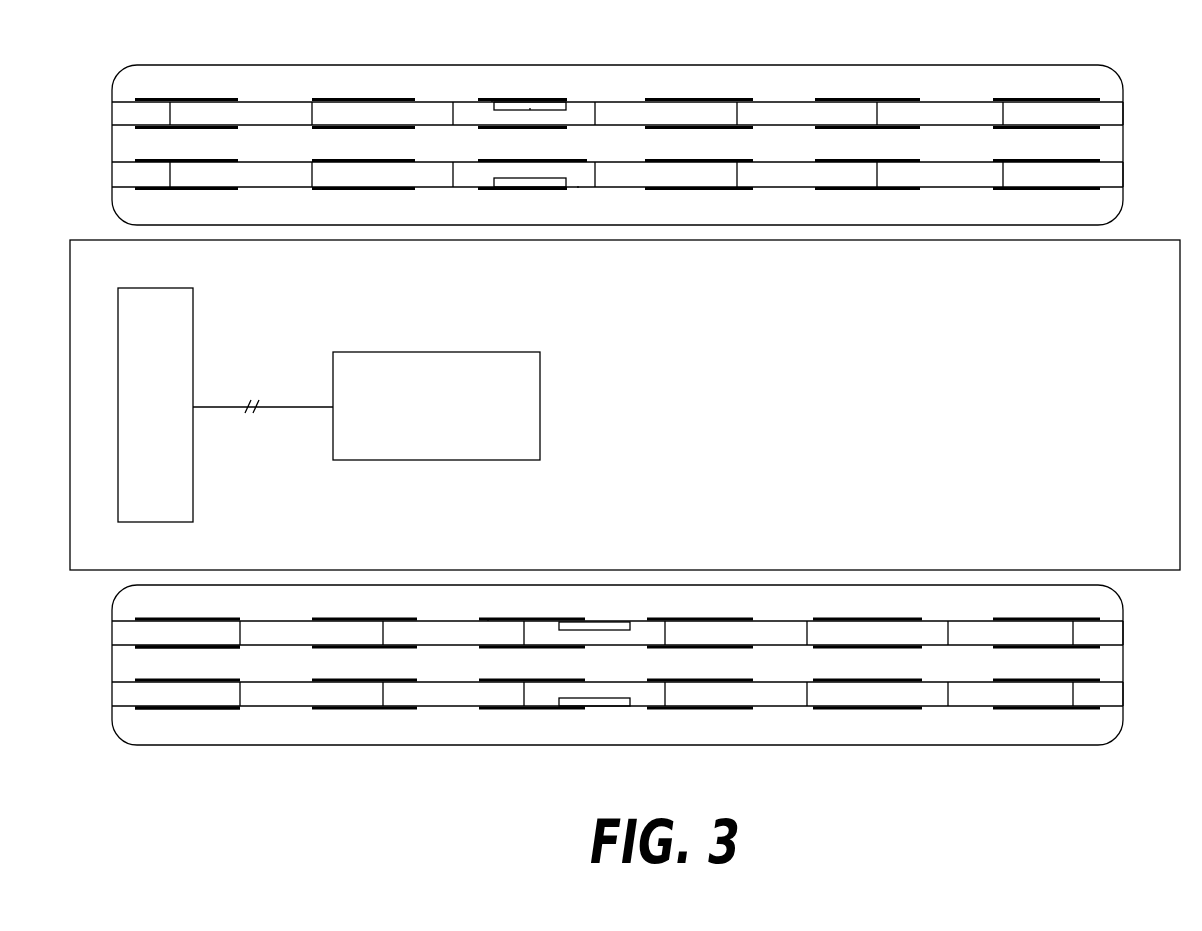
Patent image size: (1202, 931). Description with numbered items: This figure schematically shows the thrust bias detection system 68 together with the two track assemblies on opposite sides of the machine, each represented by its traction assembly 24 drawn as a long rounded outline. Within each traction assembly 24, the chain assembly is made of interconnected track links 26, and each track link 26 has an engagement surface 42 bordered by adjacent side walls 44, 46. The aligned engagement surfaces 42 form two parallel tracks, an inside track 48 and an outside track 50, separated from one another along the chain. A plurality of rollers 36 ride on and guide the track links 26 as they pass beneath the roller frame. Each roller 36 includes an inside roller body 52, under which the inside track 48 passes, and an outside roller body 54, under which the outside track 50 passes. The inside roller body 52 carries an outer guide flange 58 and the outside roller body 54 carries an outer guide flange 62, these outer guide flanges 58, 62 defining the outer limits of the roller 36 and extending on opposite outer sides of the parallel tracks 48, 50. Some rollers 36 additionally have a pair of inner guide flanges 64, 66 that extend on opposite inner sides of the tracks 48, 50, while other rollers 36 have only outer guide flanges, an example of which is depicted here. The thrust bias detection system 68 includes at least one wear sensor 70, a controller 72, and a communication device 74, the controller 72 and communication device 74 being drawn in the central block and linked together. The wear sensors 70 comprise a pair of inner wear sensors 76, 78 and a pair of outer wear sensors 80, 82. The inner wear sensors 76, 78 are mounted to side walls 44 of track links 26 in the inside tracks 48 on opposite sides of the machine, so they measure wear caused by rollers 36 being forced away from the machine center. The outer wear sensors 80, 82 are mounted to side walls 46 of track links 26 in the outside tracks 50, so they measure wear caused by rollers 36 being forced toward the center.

The traction assembly 24 is at (1092, 76).
The track links 26 is at (1121, 112).
The rollers 36 is at (215, 98).
The engagement surface 42 is at (492, 118).
The side wall 44 is at (576, 125).
The side wall 46 is at (466, 160).
The inside track 48 is at (116, 172).
The outside track 50 is at (116, 110).
The inside roller body 52 is at (218, 190).
The outside roller body 54 is at (228, 128).
The outer guide flange 58 is at (578, 188).
The outer guide flange 62 is at (568, 103).
The inner guide flange 64 is at (754, 160).
The inner guide flange 66 is at (694, 128).
The thrust bias detection system 68 is at (710, 312).
The wear sensor 70 is at (492, 99).
The controller 72 is at (540, 395).
The communication device 74 is at (193, 308).
The inner wear sensor 76 is at (498, 186).
The inner wear sensor 78 is at (566, 624).
The outer wear sensor 80 is at (531, 109).
The outer wear sensor 82 is at (595, 708).